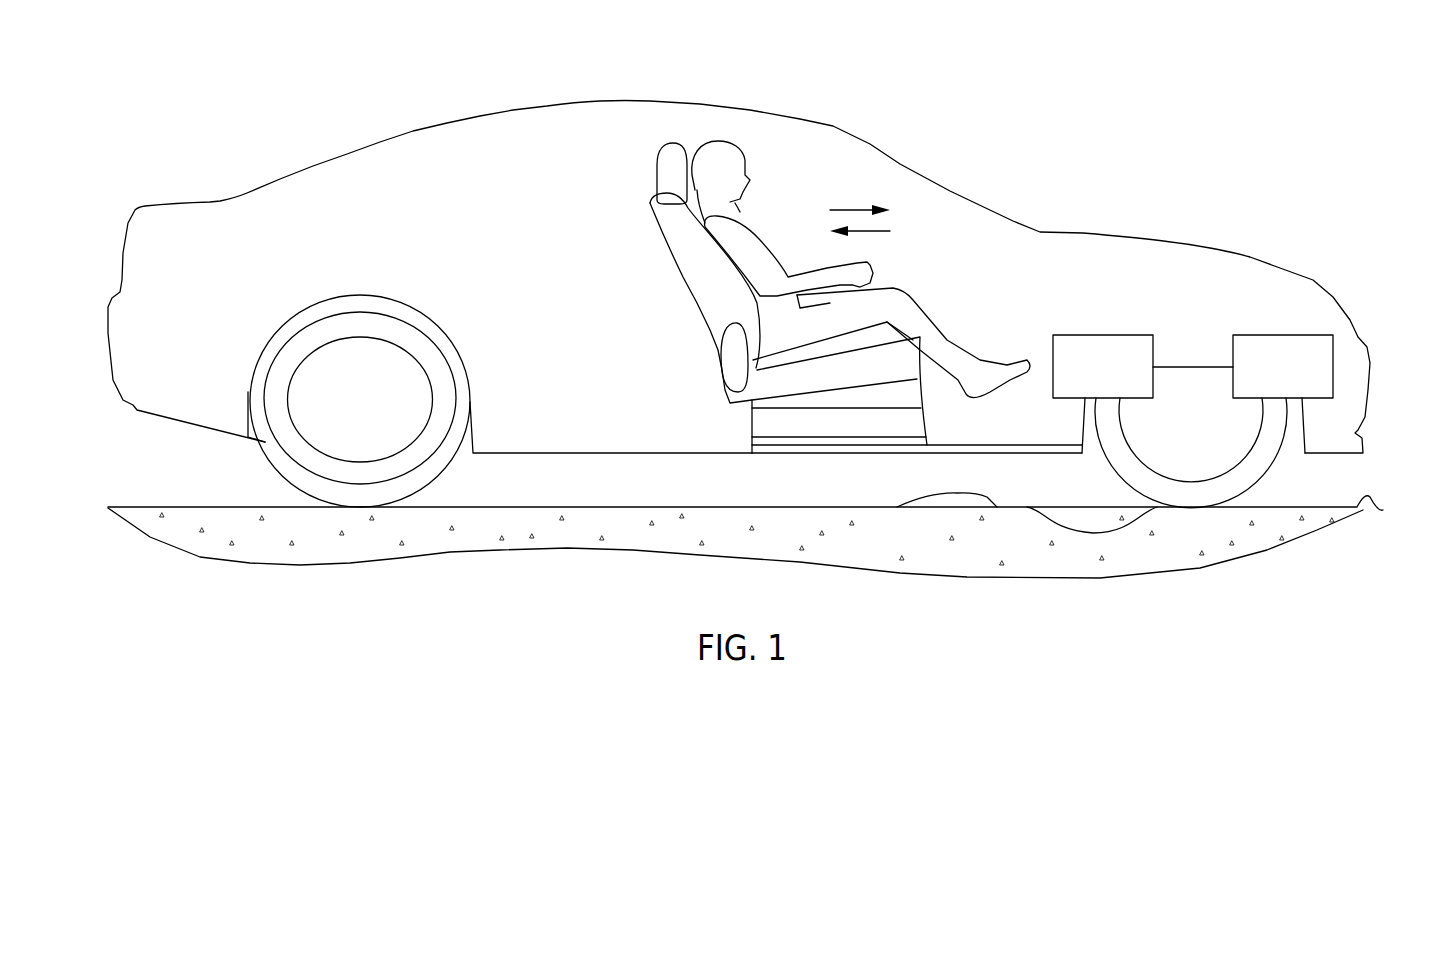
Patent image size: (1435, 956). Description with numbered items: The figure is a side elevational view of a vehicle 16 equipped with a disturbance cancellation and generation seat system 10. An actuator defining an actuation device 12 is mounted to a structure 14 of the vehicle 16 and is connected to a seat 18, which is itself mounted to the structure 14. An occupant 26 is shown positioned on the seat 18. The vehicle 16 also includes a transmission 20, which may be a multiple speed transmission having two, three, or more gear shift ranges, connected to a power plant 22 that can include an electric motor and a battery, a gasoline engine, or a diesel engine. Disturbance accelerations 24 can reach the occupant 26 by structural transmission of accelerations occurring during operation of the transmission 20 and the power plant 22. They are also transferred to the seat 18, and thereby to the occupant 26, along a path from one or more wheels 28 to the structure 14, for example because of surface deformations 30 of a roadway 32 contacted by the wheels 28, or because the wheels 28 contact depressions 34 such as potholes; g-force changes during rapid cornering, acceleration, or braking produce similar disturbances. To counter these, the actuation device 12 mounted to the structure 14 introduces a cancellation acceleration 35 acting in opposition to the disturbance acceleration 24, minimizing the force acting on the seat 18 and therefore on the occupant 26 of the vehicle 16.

The disturbance cancellation and generation seat system 10 is at (1060, 150).
The actuation device 12 is at (908, 430).
The structure 14 is at (752, 428).
The vehicle 16 is at (797, 122).
The seat 18 is at (648, 204).
The transmission 20 is at (1088, 348).
The power plant 22 is at (1270, 348).
The disturbance accelerations 24 is at (877, 231).
The occupant 26 is at (773, 244).
The wheels 28 is at (1263, 476).
The surface deformations 30 is at (922, 496).
The roadway 32 is at (1383, 510).
The depressions 34 is at (1093, 532).
The cancellation acceleration 35 is at (855, 205).